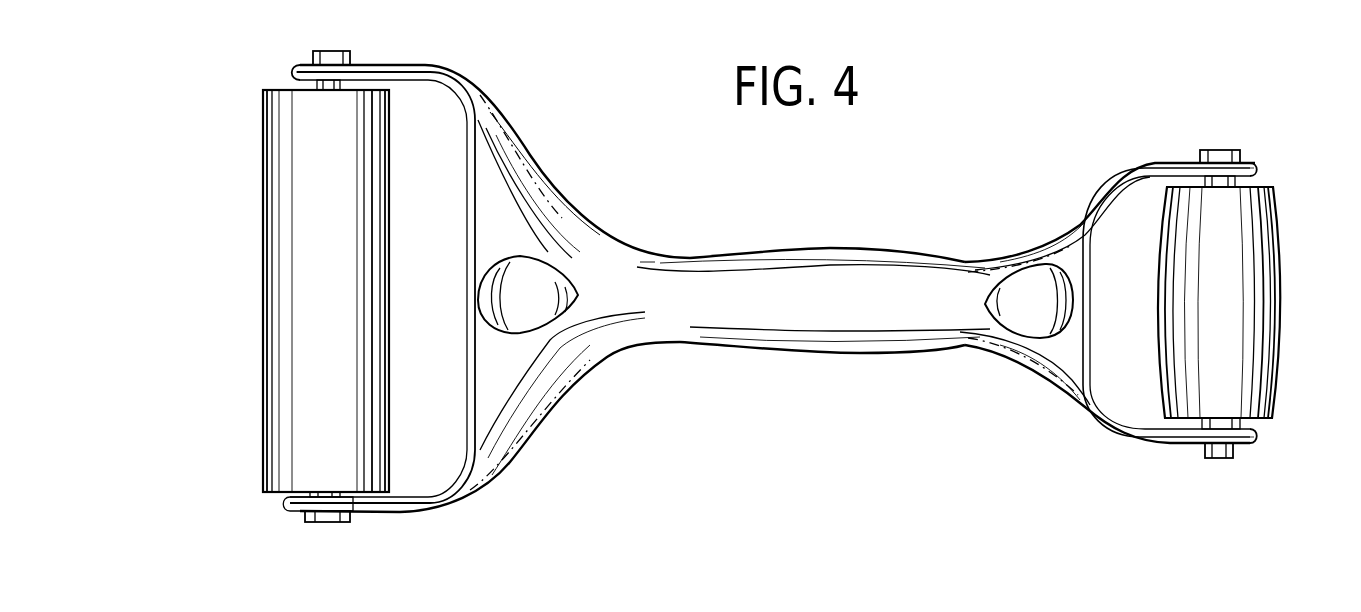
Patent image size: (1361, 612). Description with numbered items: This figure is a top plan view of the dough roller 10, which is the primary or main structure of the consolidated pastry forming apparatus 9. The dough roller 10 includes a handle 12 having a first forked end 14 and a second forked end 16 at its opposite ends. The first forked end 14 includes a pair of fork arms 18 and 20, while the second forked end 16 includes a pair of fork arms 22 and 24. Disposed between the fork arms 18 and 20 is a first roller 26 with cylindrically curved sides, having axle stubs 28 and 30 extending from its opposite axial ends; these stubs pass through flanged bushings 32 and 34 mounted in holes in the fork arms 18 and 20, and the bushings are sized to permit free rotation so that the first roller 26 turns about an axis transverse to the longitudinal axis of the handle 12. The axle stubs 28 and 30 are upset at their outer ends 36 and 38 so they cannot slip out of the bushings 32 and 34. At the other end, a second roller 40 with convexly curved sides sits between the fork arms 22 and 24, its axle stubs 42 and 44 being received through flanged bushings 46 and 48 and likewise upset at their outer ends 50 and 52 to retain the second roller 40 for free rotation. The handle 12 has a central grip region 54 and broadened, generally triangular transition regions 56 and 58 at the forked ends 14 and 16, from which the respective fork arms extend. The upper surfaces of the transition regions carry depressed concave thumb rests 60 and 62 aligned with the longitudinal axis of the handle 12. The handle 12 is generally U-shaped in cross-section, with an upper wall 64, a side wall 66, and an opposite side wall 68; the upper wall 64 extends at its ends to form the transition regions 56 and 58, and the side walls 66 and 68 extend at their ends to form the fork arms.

The consolidated pastry forming apparatus 9 is at (877, 239).
The dough roller 10 is at (716, 399).
The handle 12 is at (755, 331).
The first forked end 14 is at (478, 66).
The second forked end 16 is at (1088, 430).
The fork arm 18 is at (392, 65).
The fork arm 20 is at (420, 511).
The fork arm 22 is at (1150, 163).
The fork arm 24 is at (1160, 445).
The first roller 26 is at (266, 240).
The axle stub 28 is at (313, 88).
The axle stub 30 is at (312, 496).
The flanged bushing 32 is at (310, 65).
The flanged bushing 34 is at (300, 511).
The upset outer end 36 is at (337, 50).
The upset outer end 38 is at (330, 523).
The second roller 40 is at (1283, 294).
The axle stub 42 is at (1242, 183).
The axle stub 44 is at (1243, 424).
The flanged bushing 46 is at (1245, 167).
The flanged bushing 48 is at (1240, 448).
The upset outer end 50 is at (1222, 150).
The upset outer end 52 is at (1215, 458).
The central grip region 54 is at (845, 262).
The transition region 56 is at (500, 205).
The transition region 58 is at (1070, 255).
The thumb rest 60 is at (530, 312).
The thumb rest 62 is at (1030, 320).
The upper wall 64 is at (838, 312).
The side wall 66 is at (793, 250).
The side wall 68 is at (840, 353).